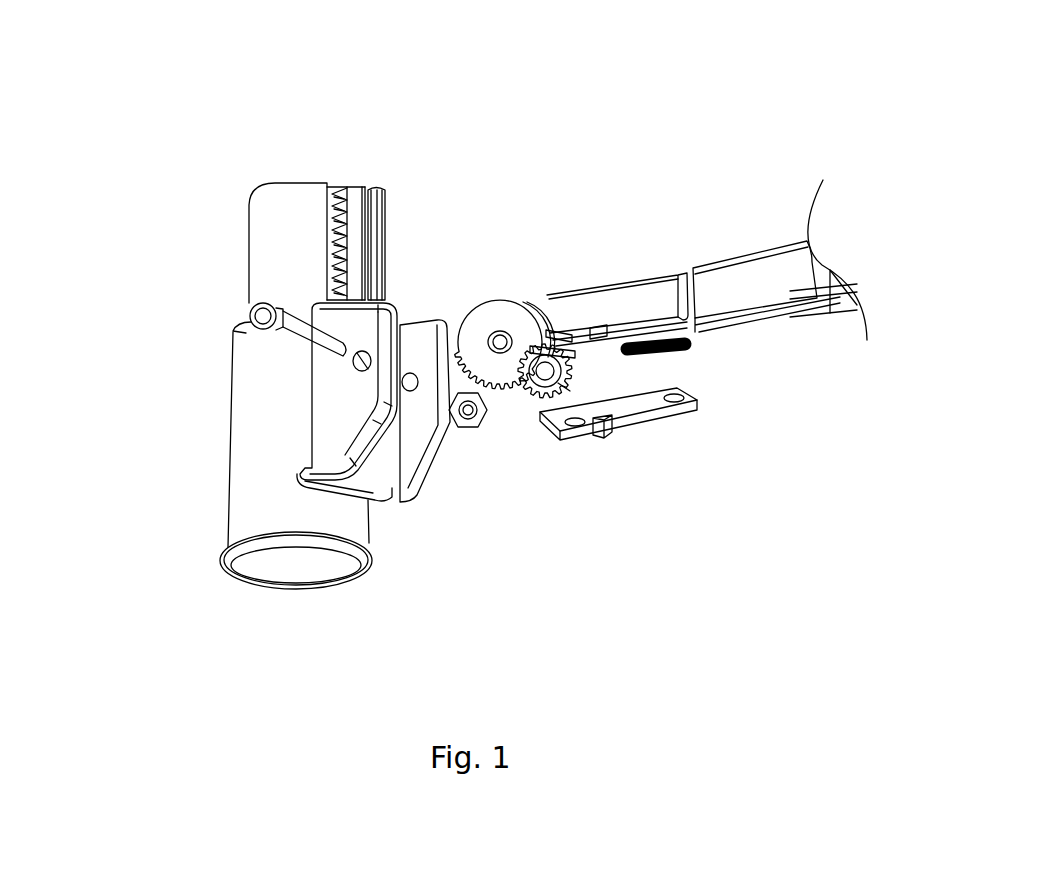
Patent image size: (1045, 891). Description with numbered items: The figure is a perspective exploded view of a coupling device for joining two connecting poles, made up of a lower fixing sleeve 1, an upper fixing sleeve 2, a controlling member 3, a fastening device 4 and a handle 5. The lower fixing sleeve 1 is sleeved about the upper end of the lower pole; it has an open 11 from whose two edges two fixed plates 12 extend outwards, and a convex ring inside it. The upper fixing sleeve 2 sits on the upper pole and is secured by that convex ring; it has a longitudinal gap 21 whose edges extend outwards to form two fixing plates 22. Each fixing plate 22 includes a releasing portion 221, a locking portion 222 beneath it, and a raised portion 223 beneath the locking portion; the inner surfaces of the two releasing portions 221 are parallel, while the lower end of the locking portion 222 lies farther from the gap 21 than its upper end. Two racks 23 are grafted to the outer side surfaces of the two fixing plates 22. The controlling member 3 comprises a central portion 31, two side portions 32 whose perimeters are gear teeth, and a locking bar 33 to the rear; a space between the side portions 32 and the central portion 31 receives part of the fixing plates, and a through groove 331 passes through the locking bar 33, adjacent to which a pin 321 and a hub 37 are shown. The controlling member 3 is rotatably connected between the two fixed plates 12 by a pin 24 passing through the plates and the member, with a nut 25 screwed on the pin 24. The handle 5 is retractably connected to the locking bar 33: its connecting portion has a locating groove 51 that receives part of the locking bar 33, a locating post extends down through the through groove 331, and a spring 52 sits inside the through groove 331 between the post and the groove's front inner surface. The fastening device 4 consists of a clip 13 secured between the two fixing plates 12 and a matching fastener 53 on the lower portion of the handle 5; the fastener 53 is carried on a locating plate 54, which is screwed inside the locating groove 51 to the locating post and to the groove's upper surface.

The lower fixing sleeve 1 is at (302, 429).
The open 11 is at (403, 353).
The fixed plates 12 is at (340, 386).
The clip 13 is at (388, 508).
The upper fixing sleeve 2 is at (301, 182).
The longitudinal gap 21 is at (377, 190).
The fixing plates 22 is at (355, 232).
The releasing portion 221 is at (357, 205).
The locking portion 222 is at (350, 241).
The guide rail 223 is at (355, 277).
The racks 23 is at (340, 243).
The pin 24 is at (253, 323).
The nut 25 is at (467, 430).
The controlling member 3 is at (549, 292).
The central portion 31 is at (563, 393).
The side portions 32 is at (505, 392).
The pin 321 is at (568, 343).
The locking bar 33 is at (653, 295).
The through groove 331 is at (608, 338).
The gear hub 37 is at (530, 408).
The fastening device 4 is at (540, 547).
The handle 5 is at (818, 308).
The locating groove 51 is at (753, 317).
The spring 52 is at (690, 352).
The fastener 53 is at (617, 437).
The locating plate 54 is at (653, 420).